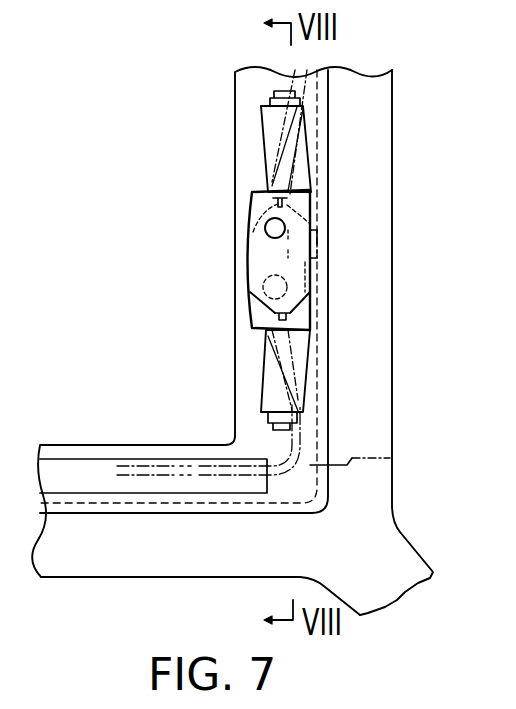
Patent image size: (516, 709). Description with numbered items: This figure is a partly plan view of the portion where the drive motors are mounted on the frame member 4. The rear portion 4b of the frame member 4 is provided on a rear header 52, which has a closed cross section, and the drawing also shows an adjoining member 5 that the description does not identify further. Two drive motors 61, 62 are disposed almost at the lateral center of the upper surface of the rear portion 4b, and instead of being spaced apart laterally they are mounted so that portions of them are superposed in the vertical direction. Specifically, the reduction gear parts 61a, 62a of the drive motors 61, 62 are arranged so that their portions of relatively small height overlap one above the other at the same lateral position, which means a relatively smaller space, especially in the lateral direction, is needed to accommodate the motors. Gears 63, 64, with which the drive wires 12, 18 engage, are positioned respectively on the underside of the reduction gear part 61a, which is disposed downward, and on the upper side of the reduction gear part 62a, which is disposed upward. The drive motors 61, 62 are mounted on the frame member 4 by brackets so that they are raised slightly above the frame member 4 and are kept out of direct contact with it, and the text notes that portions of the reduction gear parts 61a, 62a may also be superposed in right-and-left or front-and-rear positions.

The frame member 4 is at (235, 112).
The rear portion of the frame member 4b is at (235, 172).
The side sill 5 is at (75, 468).
The drive wire 12 is at (290, 442).
The drive wire 18 is at (390, 459).
The rear header 52 is at (393, 232).
The drive motor 61 is at (302, 360).
The reduction gear part 61a is at (308, 317).
The drive motor 62 is at (300, 150).
The reduction gear part 62a is at (250, 255).
The gear 63 is at (257, 272).
The gear 64 is at (278, 228).